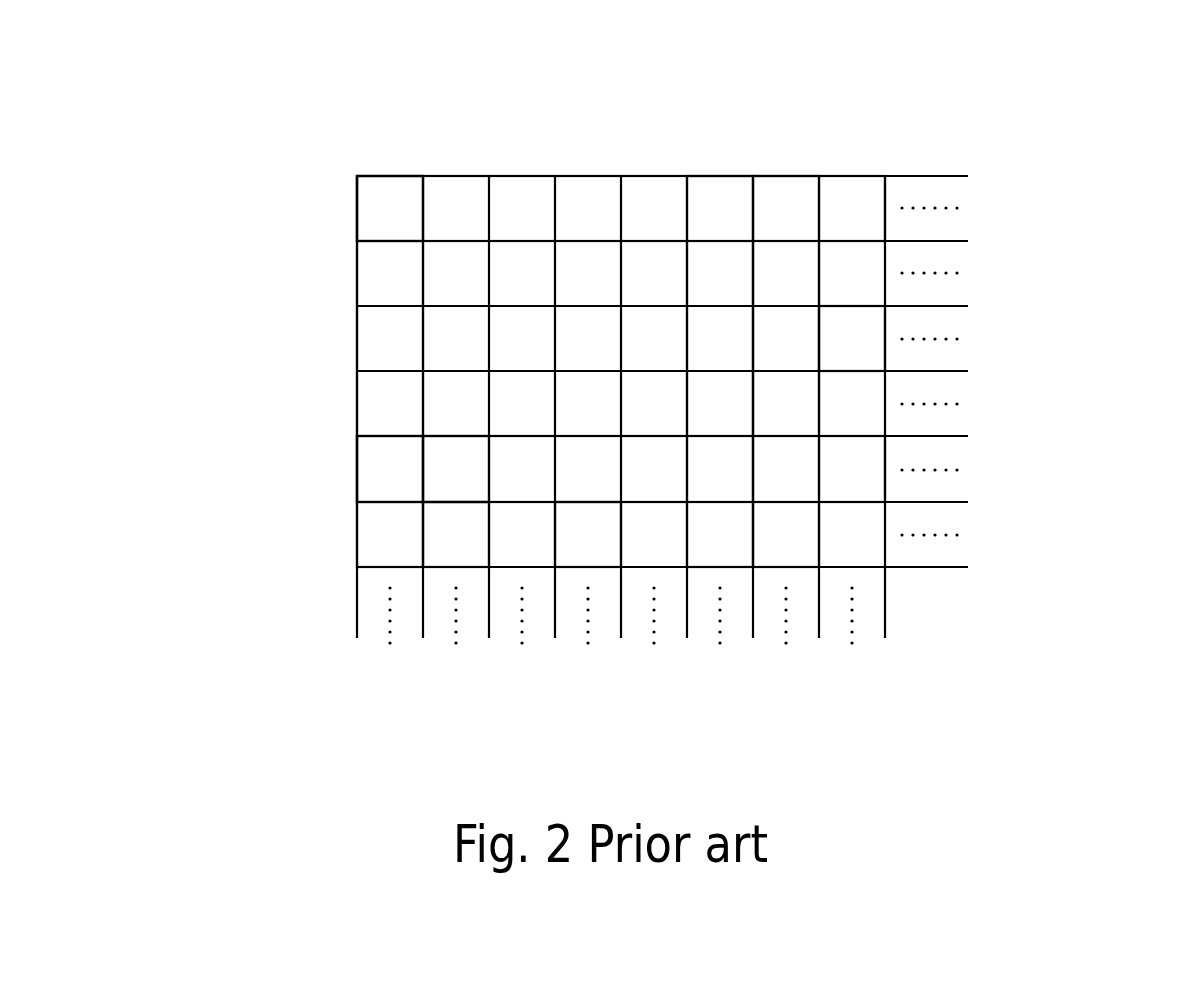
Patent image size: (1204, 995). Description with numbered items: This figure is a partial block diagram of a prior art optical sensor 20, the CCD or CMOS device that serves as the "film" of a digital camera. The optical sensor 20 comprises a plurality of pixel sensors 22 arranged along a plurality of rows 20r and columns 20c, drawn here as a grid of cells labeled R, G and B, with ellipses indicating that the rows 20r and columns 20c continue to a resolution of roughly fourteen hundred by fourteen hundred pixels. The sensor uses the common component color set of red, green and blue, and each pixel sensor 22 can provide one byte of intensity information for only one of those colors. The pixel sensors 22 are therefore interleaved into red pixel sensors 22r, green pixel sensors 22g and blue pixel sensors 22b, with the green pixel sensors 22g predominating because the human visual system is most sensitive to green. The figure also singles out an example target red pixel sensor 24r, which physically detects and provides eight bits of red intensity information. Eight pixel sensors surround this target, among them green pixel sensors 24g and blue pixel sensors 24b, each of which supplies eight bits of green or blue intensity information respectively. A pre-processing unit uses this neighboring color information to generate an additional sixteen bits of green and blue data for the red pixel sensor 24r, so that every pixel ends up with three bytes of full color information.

The optical sensor 20 is at (1048, 92).
The rows 20r is at (885, 135).
The columns 20c is at (221, 593).
The pixel sensor 22 is at (360, 209).
The green pixel sensor 22g is at (443, 448).
The red pixel sensor 22r is at (370, 491).
The blue pixel sensor 22b is at (437, 560).
The red pixel sensor 24r is at (805, 440).
The blue pixel sensor 24b is at (753, 558).
The green pixel sensor 24g is at (811, 555).